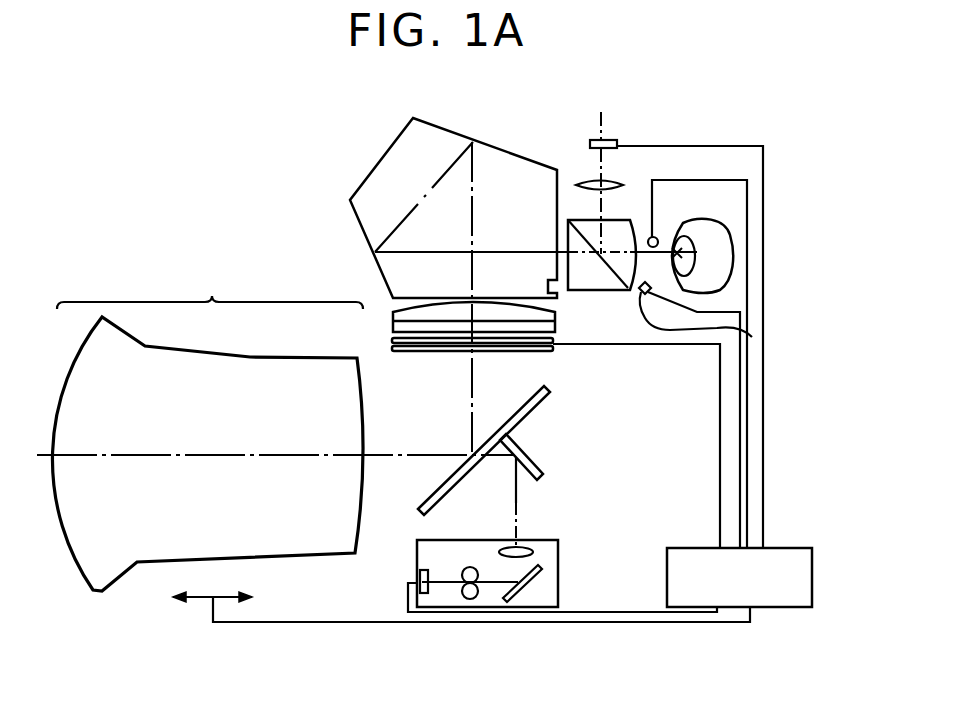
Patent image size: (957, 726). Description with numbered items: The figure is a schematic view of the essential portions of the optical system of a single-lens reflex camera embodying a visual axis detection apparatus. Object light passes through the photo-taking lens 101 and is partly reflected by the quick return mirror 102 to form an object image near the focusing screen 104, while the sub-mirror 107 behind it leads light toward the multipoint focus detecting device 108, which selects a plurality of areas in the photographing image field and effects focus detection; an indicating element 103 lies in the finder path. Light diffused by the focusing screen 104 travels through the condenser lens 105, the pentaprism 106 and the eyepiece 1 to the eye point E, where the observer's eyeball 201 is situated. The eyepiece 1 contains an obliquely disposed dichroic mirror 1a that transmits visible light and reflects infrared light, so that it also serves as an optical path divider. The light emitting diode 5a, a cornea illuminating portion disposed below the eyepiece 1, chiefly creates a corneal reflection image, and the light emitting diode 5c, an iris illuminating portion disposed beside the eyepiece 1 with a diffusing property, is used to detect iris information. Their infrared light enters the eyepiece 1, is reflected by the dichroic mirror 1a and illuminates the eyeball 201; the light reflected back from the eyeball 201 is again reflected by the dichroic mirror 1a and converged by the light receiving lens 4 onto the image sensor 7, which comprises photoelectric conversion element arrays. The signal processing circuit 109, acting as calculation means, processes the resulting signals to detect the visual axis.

The photo-taking lens 101 is at (207, 428).
The quick return (QR) mirror 102 is at (543, 397).
The indicating element 103 is at (553, 350).
The focusing screen 104 is at (393, 338).
The condenser lens 105 is at (393, 308).
The pentaprism 106 is at (388, 152).
The sub-mirror 107 is at (540, 473).
The multipoint focus detecting device 108 is at (558, 557).
The signal processing circuit 109 is at (785, 548).
The image sensor 7 is at (617, 144).
The light receiving lens 4 is at (622, 185).
The eyepiece 1 is at (625, 218).
The dichroic mirror 1a is at (618, 283).
The light emitting diode (iris illuminating portion) 5c is at (660, 238).
The light emitting diode (cornea illuminating portion) 5a is at (752, 337).
The eyeball 201 is at (737, 263).
The eye point E is at (689, 415).